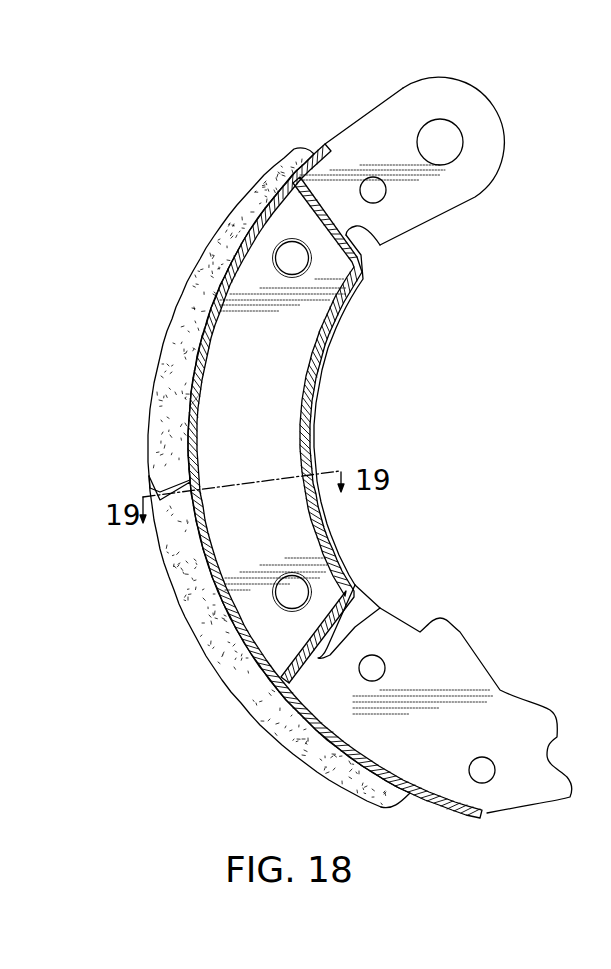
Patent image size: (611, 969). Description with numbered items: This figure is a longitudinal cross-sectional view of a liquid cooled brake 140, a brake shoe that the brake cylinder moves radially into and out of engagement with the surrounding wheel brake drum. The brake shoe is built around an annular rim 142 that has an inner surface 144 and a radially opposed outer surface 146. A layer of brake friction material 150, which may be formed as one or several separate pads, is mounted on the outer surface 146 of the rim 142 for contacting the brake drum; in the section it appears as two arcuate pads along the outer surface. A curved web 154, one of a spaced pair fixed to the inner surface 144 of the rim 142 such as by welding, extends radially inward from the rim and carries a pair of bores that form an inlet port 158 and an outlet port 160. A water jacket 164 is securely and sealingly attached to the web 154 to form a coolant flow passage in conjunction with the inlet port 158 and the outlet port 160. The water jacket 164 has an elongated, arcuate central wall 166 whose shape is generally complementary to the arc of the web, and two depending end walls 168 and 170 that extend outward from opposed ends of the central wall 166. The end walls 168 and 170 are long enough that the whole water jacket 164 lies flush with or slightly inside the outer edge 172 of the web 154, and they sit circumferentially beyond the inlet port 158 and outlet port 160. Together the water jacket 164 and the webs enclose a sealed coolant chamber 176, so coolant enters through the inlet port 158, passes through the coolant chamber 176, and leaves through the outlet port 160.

The liquid cooled brake 140 is at (505, 100).
The annular rim 142 is at (318, 736).
The inner surface 144 is at (313, 708).
The outer surface 146 is at (352, 793).
The brake friction material 150 is at (253, 205).
The web 154 is at (365, 117).
The inlet port 158 is at (287, 263).
The outlet port 160 is at (285, 600).
The water jacket 164 is at (365, 398).
The central wall 166 is at (330, 348).
The end wall 168 is at (390, 239).
The end wall 170 is at (380, 608).
The outer edge 172 is at (466, 632).
The coolant chamber 176 is at (238, 393).